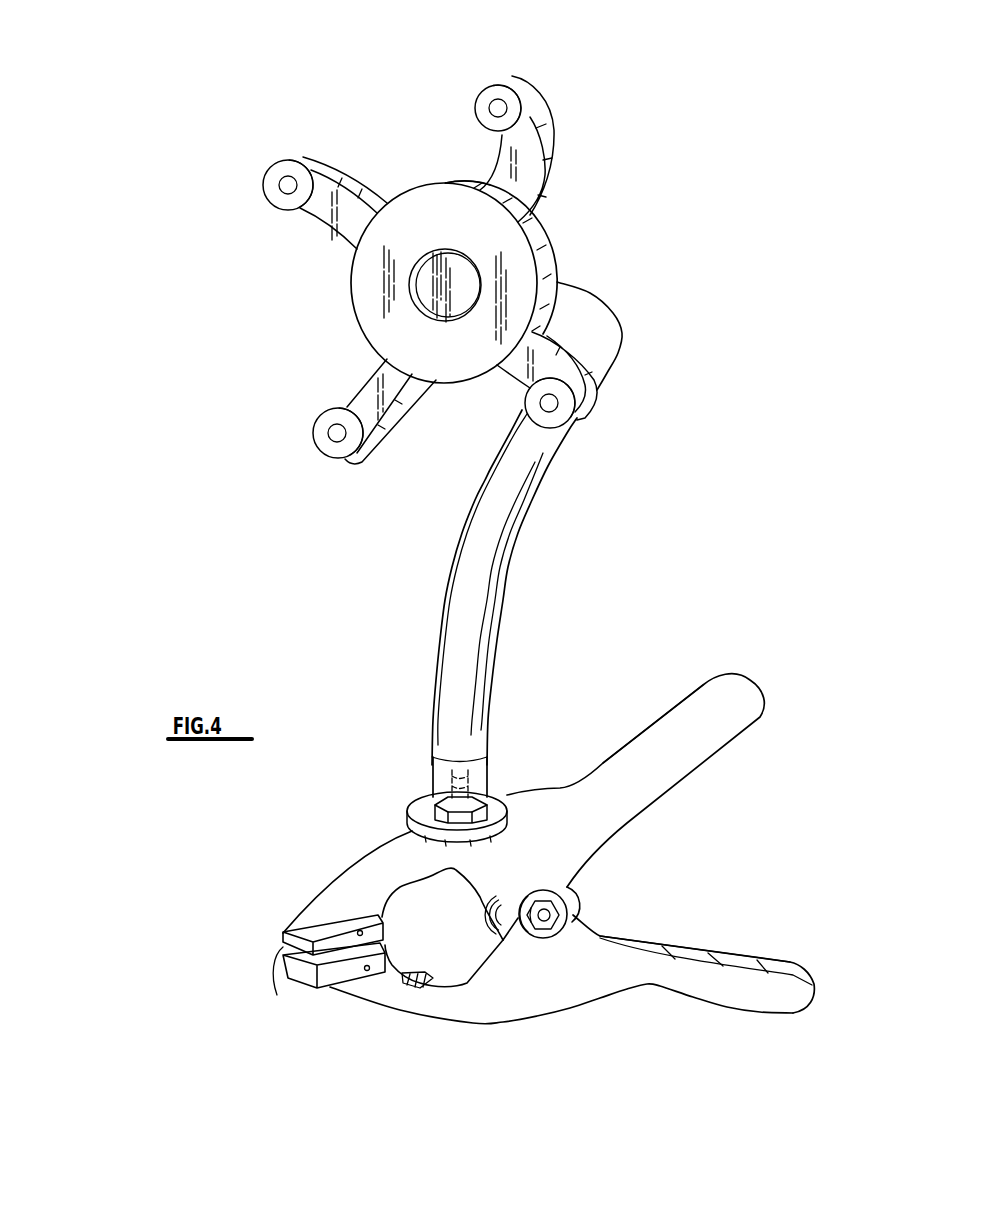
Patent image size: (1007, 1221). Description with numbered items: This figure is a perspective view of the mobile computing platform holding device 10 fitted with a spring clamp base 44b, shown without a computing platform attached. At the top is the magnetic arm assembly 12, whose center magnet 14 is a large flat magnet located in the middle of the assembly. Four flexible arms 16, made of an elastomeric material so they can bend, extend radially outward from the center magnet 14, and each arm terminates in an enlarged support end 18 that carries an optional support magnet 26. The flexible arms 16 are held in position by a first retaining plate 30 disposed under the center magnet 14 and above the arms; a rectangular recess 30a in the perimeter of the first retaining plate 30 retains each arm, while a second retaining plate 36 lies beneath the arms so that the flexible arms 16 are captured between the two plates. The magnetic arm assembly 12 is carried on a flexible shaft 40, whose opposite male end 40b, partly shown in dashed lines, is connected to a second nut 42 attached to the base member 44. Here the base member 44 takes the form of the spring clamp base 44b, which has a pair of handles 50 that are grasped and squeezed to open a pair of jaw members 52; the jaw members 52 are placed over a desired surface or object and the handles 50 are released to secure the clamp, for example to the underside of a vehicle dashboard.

The mobile computing platform holding device 10 is at (138, 88).
The magnetic arm assembly 12 is at (298, 326).
The center magnet 14 is at (418, 284).
The flexible arms 16 is at (348, 200).
The support end 18 is at (291, 167).
The support magnets 26 is at (288, 186).
The first retaining plate 30 is at (514, 308).
The rectangular recess 30a is at (534, 215).
The second retaining plate 36 is at (558, 254).
The flexible shaft 40 is at (477, 597).
The male end 40b is at (440, 775).
The second nut 42 is at (508, 787).
The base member 44 is at (420, 810).
The spring clamp base 44b is at (575, 838).
The handles 50 is at (707, 707).
The jaw members 52 is at (310, 970).